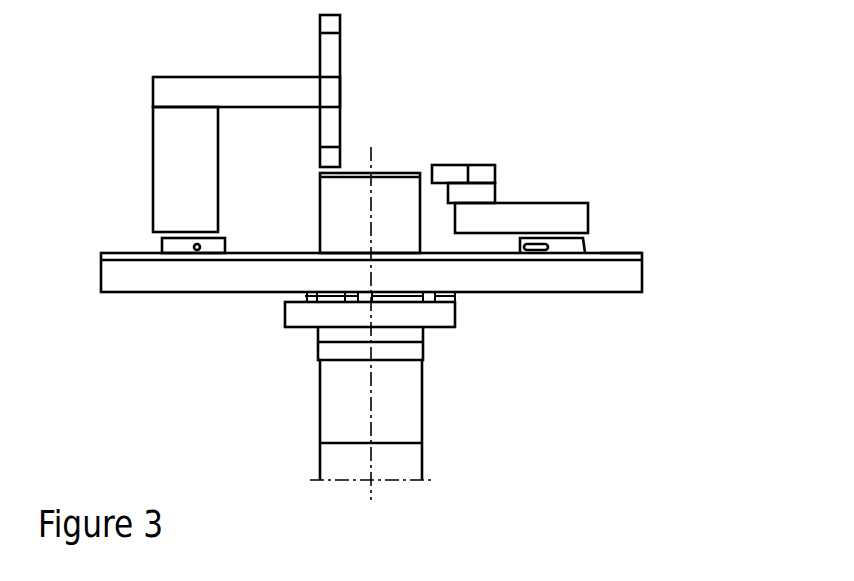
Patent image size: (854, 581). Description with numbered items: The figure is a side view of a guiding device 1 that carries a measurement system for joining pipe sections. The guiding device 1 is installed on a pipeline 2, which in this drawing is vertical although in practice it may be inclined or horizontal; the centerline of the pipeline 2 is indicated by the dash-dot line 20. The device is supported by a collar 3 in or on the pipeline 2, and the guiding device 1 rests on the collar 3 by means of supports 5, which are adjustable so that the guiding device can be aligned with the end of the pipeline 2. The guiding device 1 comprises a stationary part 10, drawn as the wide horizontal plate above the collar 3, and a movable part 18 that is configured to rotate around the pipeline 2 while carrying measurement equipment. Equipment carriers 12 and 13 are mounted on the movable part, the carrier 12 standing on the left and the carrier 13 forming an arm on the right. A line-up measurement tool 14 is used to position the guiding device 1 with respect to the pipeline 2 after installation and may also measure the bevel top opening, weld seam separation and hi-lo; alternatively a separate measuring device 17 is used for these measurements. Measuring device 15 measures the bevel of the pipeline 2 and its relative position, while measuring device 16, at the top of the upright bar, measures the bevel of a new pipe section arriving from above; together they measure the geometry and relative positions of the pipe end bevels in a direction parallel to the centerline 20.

The guiding device 1 is at (628, 325).
The pipeline 2 is at (335, 423).
The collar 3 is at (442, 313).
The supports 5 is at (357, 295).
The stationary part 10 is at (635, 280).
The equipment carrier 12 is at (172, 150).
The equipment carrier 13 is at (570, 212).
The line-up measurement tool 14 is at (457, 166).
The measuring device 15 is at (340, 152).
The measuring device 16 is at (330, 22).
The separate measuring device 17 is at (448, 177).
The movable part 18 is at (642, 252).
The centerline 20 is at (370, 418).